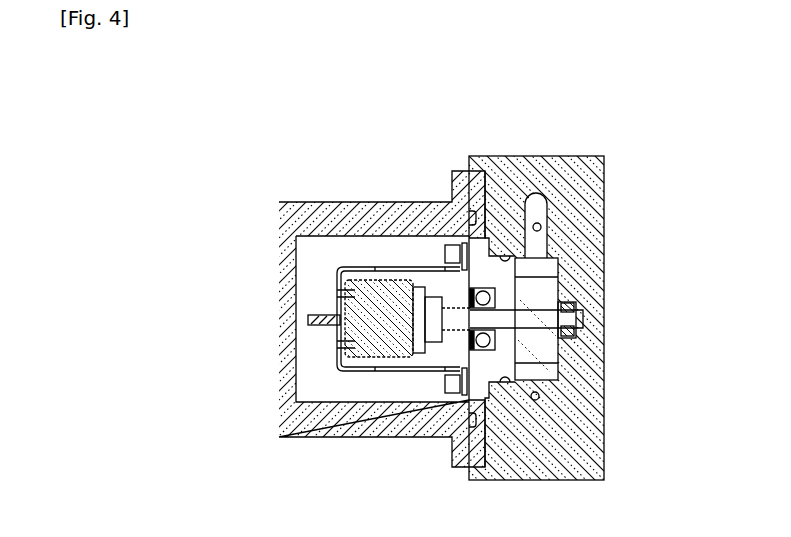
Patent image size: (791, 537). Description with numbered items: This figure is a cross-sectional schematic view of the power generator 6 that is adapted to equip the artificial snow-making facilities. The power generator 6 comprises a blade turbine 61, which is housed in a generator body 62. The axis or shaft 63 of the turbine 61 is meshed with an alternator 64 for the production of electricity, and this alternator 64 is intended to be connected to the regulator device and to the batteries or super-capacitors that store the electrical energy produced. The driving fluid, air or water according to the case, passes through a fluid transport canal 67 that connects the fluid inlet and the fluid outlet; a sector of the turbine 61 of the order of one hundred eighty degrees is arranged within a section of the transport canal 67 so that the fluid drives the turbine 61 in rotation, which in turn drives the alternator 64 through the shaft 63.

The power generator 6 is at (503, 136).
The generator body 62 is at (590, 206).
The fluid transport canal 67 is at (548, 213).
The shaft 63 is at (548, 285).
The blade turbine 61 is at (553, 355).
The alternator 64 is at (384, 368).